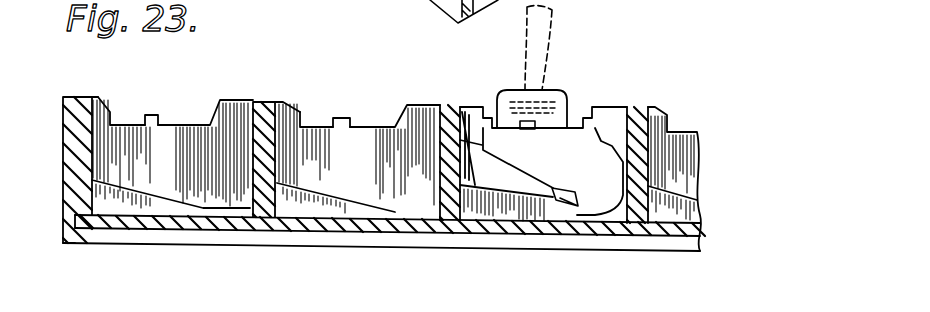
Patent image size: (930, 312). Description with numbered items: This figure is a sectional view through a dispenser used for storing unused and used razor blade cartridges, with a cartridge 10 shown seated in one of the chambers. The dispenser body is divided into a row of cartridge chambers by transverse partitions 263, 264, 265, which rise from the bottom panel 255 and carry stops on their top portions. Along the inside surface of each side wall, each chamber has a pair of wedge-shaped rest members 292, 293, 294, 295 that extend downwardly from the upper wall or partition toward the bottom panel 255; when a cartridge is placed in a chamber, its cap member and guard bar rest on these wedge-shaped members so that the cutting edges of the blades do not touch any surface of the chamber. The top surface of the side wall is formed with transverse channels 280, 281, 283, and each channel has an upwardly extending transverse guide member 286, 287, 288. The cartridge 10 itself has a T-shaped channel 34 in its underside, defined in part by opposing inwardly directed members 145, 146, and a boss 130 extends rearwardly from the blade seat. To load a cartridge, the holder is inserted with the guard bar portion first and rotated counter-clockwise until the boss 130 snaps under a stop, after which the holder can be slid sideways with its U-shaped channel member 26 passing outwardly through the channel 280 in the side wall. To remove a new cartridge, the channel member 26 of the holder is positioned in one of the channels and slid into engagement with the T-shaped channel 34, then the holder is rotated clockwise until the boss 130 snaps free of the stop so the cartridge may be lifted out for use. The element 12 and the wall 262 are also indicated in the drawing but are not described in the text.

The cartridge 10 is at (585, 173).
The stylus 12 is at (512, 182).
The U-shaped channel member 26 is at (565, 105).
The T-shaped channel 34 is at (585, 112).
The boss 130 is at (440, 138).
The inwardly directed member 145 is at (627, 106).
The inwardly directed member 146 is at (483, 104).
The bottom panel 255 is at (372, 252).
The side wall 262 is at (70, 150).
The transverse partition 263 is at (257, 182).
The transverse partition 264 is at (441, 192).
The transverse partition 265 is at (645, 172).
The channel 280 is at (127, 124).
The channel 281 is at (316, 126).
The channel 283 is at (690, 131).
The transverse guide member 286 is at (157, 114).
The transverse guide member 287 is at (342, 116).
The transverse guide member 288 is at (527, 121).
The wedge-shaped rest member 292 is at (122, 200).
The wedge-shaped rest member 293 is at (323, 206).
The wedge-shaped rest member 294 is at (547, 205).
The wedge-shaped rest member 295 is at (700, 212).